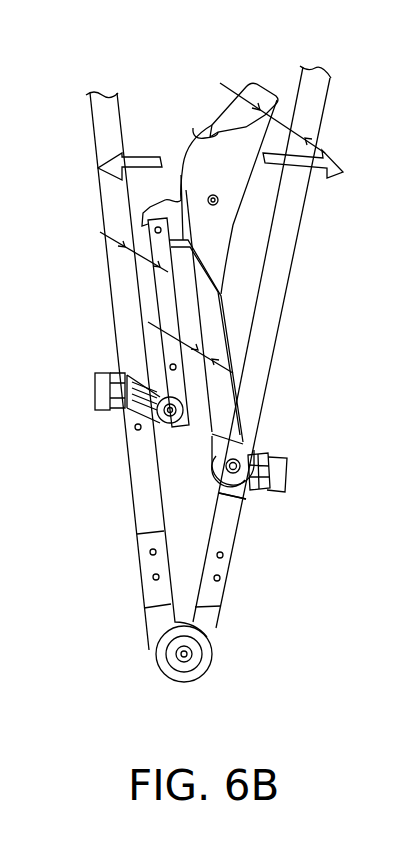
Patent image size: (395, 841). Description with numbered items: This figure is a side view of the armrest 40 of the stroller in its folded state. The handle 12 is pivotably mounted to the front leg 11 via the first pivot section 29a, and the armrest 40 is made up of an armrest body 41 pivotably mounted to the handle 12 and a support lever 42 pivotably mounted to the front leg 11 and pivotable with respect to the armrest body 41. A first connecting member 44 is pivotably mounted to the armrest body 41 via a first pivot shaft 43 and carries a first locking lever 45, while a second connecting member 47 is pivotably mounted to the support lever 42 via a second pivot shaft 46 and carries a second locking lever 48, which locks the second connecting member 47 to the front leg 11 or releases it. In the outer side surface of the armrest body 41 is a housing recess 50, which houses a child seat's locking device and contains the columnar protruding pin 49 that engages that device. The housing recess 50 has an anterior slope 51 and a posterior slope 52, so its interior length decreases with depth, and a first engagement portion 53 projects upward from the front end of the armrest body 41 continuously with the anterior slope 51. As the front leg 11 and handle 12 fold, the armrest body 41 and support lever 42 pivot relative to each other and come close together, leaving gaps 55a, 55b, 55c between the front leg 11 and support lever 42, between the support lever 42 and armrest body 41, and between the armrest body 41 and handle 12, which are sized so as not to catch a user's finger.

The front leg 11 is at (143, 498).
The handle 12 is at (268, 313).
The first pivot section 29a is at (181, 654).
The armrest 40 is at (171, 92).
The armrest body 41 is at (223, 323).
The support lever 42 is at (160, 290).
The first pivot shaft 43 is at (218, 462).
The first connecting member 44 is at (250, 497).
The first locking lever 45 is at (283, 468).
The second pivot shaft 46 is at (167, 418).
The second connecting member 47 is at (132, 417).
The second locking lever 48 is at (97, 392).
The protruding pin 49 is at (219, 202).
The housing recess 50 is at (197, 173).
The anterior slope 51 is at (195, 128).
The posterior slope 52 is at (203, 250).
The first engagement portion 53 is at (278, 104).
The gap 55a is at (137, 267).
The gap 55b is at (236, 368).
The gap 55c is at (280, 122).